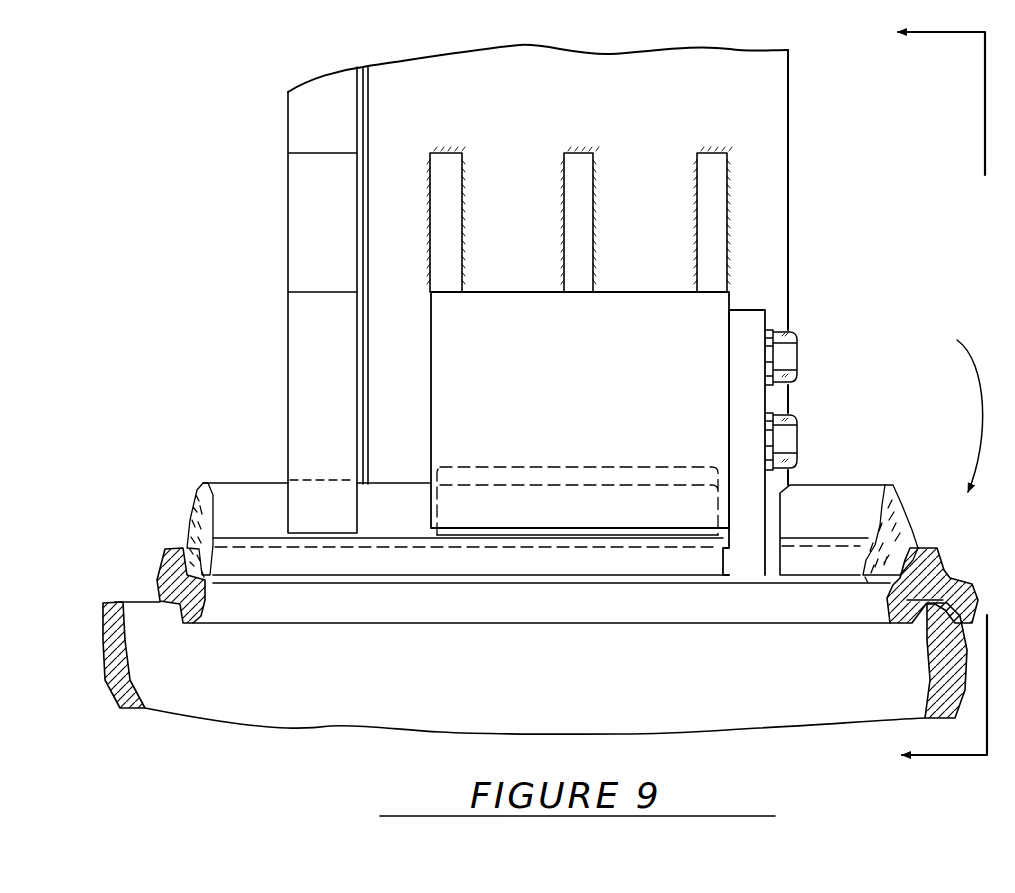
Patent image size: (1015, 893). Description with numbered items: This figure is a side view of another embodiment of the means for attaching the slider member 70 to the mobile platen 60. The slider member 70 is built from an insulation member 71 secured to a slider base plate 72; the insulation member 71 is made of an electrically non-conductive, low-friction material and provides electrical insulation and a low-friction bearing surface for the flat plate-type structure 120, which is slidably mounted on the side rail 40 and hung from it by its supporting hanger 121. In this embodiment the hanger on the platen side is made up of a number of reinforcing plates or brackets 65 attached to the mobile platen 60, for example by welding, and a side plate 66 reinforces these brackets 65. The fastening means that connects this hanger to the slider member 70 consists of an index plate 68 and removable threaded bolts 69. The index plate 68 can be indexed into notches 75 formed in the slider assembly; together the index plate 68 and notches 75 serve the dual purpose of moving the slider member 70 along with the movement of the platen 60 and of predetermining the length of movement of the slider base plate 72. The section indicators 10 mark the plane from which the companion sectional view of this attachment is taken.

The section line 10 is at (919, 394).
The side rails 40 is at (308, 702).
The mobile platen 60 is at (483, 58).
The reinforcing plates or brackets 65 is at (697, 175).
The side plate 66 is at (702, 307).
The index plate 68 is at (752, 310).
The removable threaded bolts 69 is at (795, 418).
The slider member 70 is at (947, 411).
The insulation members 71 is at (905, 512).
The slider base plates 72 is at (940, 566).
The notches 75 is at (732, 568).
The flat plate-type structures 120 is at (288, 124).
The supporting hangers 121 is at (314, 420).